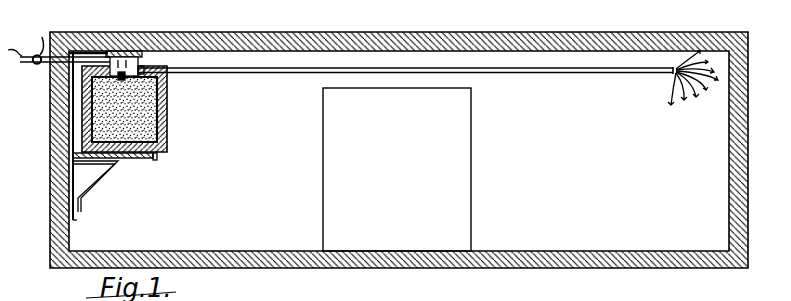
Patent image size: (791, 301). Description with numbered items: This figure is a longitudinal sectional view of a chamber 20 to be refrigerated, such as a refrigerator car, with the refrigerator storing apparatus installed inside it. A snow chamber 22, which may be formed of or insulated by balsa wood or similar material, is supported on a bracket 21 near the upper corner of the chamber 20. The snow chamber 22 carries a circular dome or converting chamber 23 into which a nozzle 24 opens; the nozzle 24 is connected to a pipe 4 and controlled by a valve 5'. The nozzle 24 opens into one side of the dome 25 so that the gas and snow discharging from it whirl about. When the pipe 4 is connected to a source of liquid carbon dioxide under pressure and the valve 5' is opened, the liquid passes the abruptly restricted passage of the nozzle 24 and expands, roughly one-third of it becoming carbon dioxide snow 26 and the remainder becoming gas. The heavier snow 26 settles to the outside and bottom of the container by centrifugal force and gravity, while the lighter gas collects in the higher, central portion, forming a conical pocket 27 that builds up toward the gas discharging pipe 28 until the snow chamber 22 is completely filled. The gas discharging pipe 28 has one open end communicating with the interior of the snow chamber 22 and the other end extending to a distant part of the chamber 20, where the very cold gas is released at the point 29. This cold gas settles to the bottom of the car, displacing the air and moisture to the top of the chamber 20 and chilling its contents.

The pipe 4 is at (11, 51).
The valve 5' is at (35, 41).
The chamber 20 is at (240, 252).
The bracket 21 is at (136, 158).
The snow chamber 22 is at (155, 118).
The converting chamber 23 is at (143, 62).
The nozzle 24 is at (66, 68).
The dome 25 is at (130, 53).
The carbon dioxide snow 26 is at (142, 123).
The conical pocket 27 is at (123, 85).
The gas discharging pipe 28 is at (263, 74).
The discharge point 29 is at (672, 74).